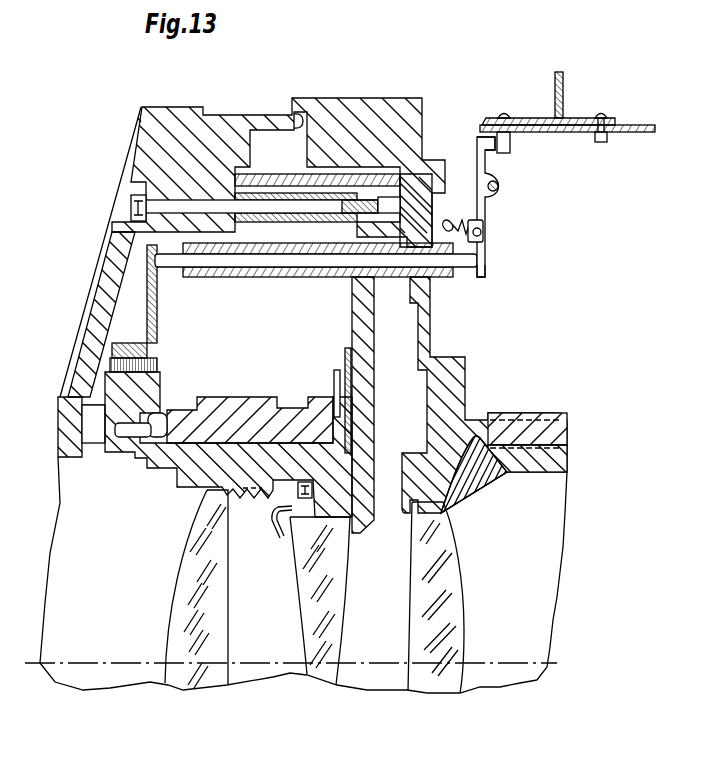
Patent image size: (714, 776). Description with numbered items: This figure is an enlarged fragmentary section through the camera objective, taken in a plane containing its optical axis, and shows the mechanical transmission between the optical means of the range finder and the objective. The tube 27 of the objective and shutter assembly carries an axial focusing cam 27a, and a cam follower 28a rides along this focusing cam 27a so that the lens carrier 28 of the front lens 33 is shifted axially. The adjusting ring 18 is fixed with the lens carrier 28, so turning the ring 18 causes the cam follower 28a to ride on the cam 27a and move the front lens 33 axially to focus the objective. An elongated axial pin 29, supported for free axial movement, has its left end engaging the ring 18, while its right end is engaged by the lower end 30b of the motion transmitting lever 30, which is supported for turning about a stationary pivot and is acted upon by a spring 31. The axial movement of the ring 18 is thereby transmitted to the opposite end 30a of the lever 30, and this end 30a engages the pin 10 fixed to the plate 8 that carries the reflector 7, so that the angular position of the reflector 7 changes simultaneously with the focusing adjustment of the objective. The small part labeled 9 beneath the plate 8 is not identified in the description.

The reflector 7 is at (556, 90).
The plate 8 is at (613, 120).
The nut 9 is at (608, 138).
The pin 10 is at (508, 150).
The adjusting ring 18 is at (157, 316).
The tube 27 is at (170, 477).
The focusing cam 27a is at (166, 440).
The lens carrier 28 is at (202, 477).
The cam follower 28a is at (158, 420).
The axial pin 29 is at (465, 267).
The motion transmitting lever 30 is at (486, 212).
The end of lever 30a is at (480, 149).
The lower end of lever 30b is at (486, 270).
The spring 31 is at (459, 217).
The front lens 33 is at (178, 608).